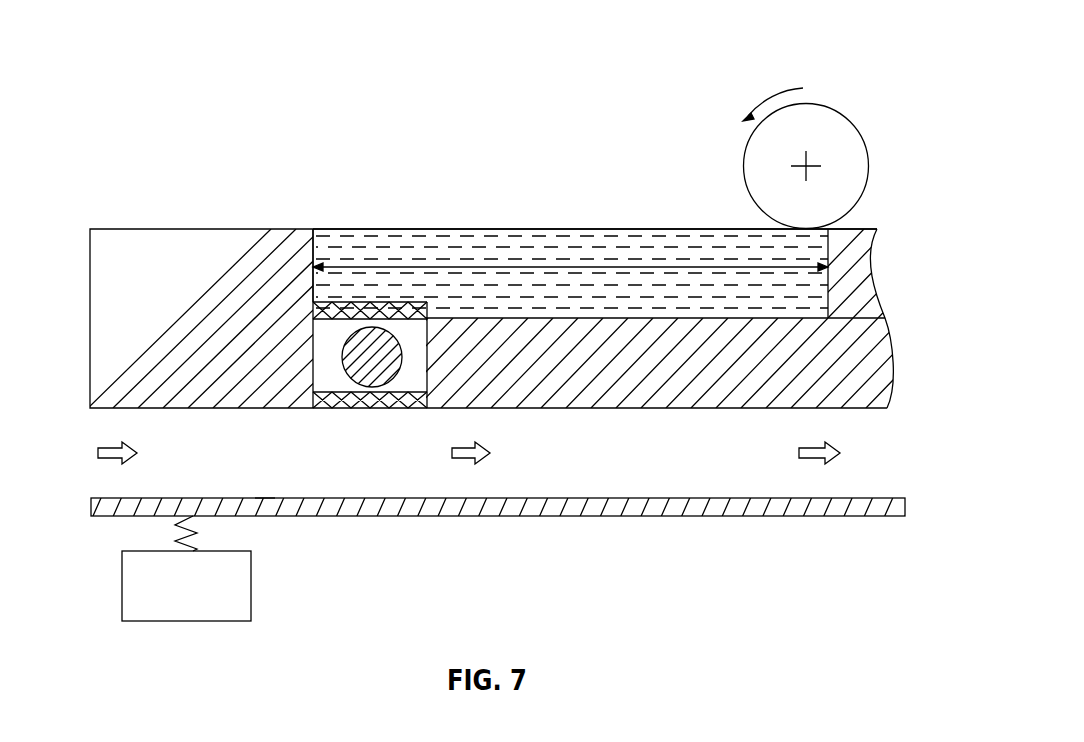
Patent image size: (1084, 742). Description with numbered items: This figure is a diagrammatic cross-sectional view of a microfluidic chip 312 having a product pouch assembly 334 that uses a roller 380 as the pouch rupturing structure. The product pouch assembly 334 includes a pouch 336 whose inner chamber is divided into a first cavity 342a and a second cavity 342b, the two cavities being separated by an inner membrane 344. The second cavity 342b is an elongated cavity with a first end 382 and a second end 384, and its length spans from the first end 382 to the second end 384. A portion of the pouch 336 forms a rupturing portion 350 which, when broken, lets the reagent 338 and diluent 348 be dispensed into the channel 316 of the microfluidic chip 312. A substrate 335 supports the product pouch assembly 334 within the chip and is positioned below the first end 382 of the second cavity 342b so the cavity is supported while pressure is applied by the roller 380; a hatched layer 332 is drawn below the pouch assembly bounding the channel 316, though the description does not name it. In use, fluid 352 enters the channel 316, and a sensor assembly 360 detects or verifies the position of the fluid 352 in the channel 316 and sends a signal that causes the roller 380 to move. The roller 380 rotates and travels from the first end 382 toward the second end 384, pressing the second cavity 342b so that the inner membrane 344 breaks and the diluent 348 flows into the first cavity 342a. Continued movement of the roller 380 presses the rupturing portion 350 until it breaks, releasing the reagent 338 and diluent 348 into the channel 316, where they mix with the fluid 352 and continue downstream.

The microfluidic chip 312 is at (688, 88).
The channel 316 is at (263, 489).
The media transport belt 332 is at (847, 507).
The product pouch assembly 334 is at (502, 215).
The substrate 335 is at (220, 243).
The pouch 336 is at (407, 228).
The reagent 338 is at (385, 375).
The first cavity 342a is at (333, 383).
The second cavity 342b is at (667, 240).
The inner membrane 344 is at (405, 300).
The diluent 348 is at (803, 302).
The rupturing portion 350 is at (372, 408).
The fluid 352 is at (112, 440).
The sensor assembly 360 is at (251, 598).
The roller 380 is at (847, 143).
The first end 382 is at (862, 226).
The second end 384 is at (328, 246).